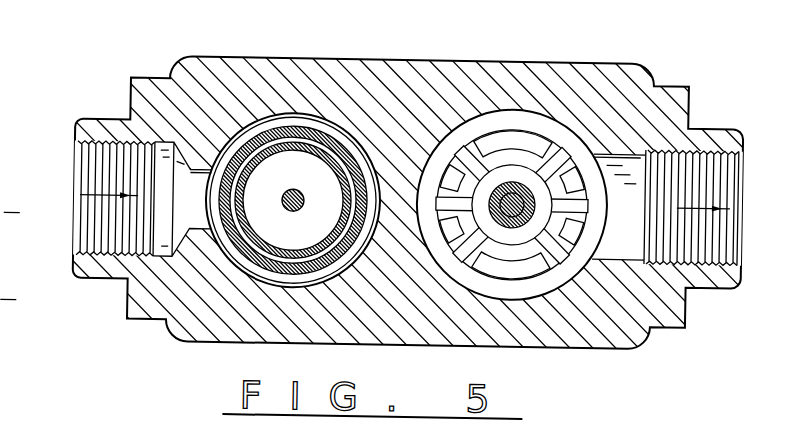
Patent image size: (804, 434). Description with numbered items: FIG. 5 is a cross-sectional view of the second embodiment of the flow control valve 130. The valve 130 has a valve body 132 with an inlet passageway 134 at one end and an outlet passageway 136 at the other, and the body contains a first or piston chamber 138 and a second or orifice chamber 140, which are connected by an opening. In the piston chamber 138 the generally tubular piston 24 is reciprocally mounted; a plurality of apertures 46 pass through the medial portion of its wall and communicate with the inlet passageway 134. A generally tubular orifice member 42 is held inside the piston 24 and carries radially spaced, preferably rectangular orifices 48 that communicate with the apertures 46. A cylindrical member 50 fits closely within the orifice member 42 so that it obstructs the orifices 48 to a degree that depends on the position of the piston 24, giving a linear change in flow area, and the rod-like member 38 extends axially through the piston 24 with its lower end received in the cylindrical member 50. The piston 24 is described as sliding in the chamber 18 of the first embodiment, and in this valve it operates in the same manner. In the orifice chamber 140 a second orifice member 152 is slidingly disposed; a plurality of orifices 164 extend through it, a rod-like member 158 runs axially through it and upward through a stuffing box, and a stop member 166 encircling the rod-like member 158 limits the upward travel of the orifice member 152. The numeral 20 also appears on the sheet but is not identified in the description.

The flow control valve 130 is at (666, 66).
The valve body 132 is at (565, 62).
The inlet passageway 134 is at (106, 170).
The outlet passageway 136 is at (717, 172).
The first or piston chamber 138 is at (264, 127).
The piston 24 is at (359, 150).
The orifice member 42 is at (299, 149).
The orifices 48 is at (247, 198).
The cylindrical member 50 is at (280, 234).
The rod-like member 38 is at (286, 214).
The apertures 46 is at (224, 201).
The second or orifice chamber 140 is at (462, 132).
The orifice member 152 is at (509, 131).
The orifices 164 is at (543, 260).
The rod-like member 158 is at (497, 213).
The stop member 166 is at (492, 212).
The housing section 20 is at (12, 204).
The chamber 18 is at (9, 291).